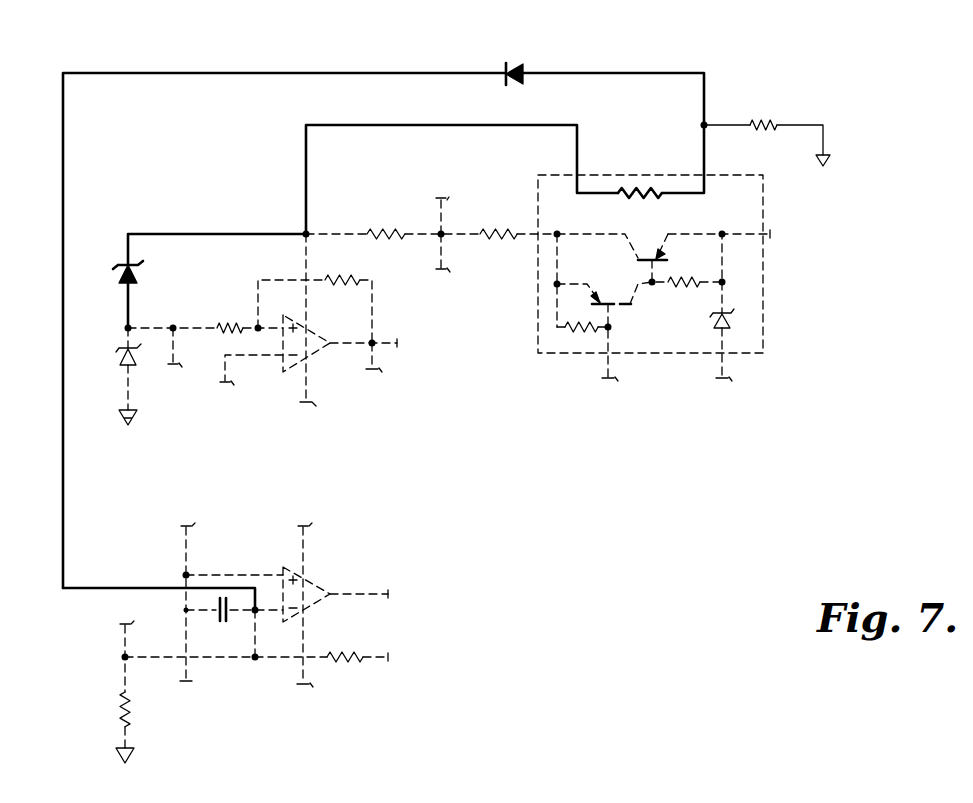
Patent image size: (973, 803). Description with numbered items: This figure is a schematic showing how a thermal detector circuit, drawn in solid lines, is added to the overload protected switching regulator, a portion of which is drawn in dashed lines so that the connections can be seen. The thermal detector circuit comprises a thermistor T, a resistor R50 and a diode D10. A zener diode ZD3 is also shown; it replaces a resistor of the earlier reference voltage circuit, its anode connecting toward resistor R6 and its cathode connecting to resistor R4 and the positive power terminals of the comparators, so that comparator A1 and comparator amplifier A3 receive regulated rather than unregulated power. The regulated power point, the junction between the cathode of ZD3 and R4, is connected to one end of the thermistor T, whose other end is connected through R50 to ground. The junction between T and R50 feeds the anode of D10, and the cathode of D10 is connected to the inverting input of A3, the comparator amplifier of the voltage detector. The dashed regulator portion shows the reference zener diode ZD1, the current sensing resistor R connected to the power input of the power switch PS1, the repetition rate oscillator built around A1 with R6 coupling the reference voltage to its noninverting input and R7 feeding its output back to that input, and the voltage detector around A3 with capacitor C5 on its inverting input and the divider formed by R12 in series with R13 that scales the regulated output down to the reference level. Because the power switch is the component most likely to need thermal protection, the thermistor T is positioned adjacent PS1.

The diode D10 is at (518, 62).
The resistor R50 is at (767, 129).
The thermistor T is at (642, 190).
The resistor R4 is at (385, 219).
The current sensing resistor R is at (498, 220).
The zener diode ZD3 is at (156, 275).
The zener diode ZD1 is at (118, 372).
The resistor R6 is at (205, 316).
The resistor R7 is at (315, 296).
The comparator A1 is at (318, 337).
The power switch PS1 is at (575, 352).
The comparator amplifier A3 is at (318, 584).
The capacitor C5 is at (234, 624).
The resistor R12 is at (357, 641).
The resistor R13 is at (144, 692).